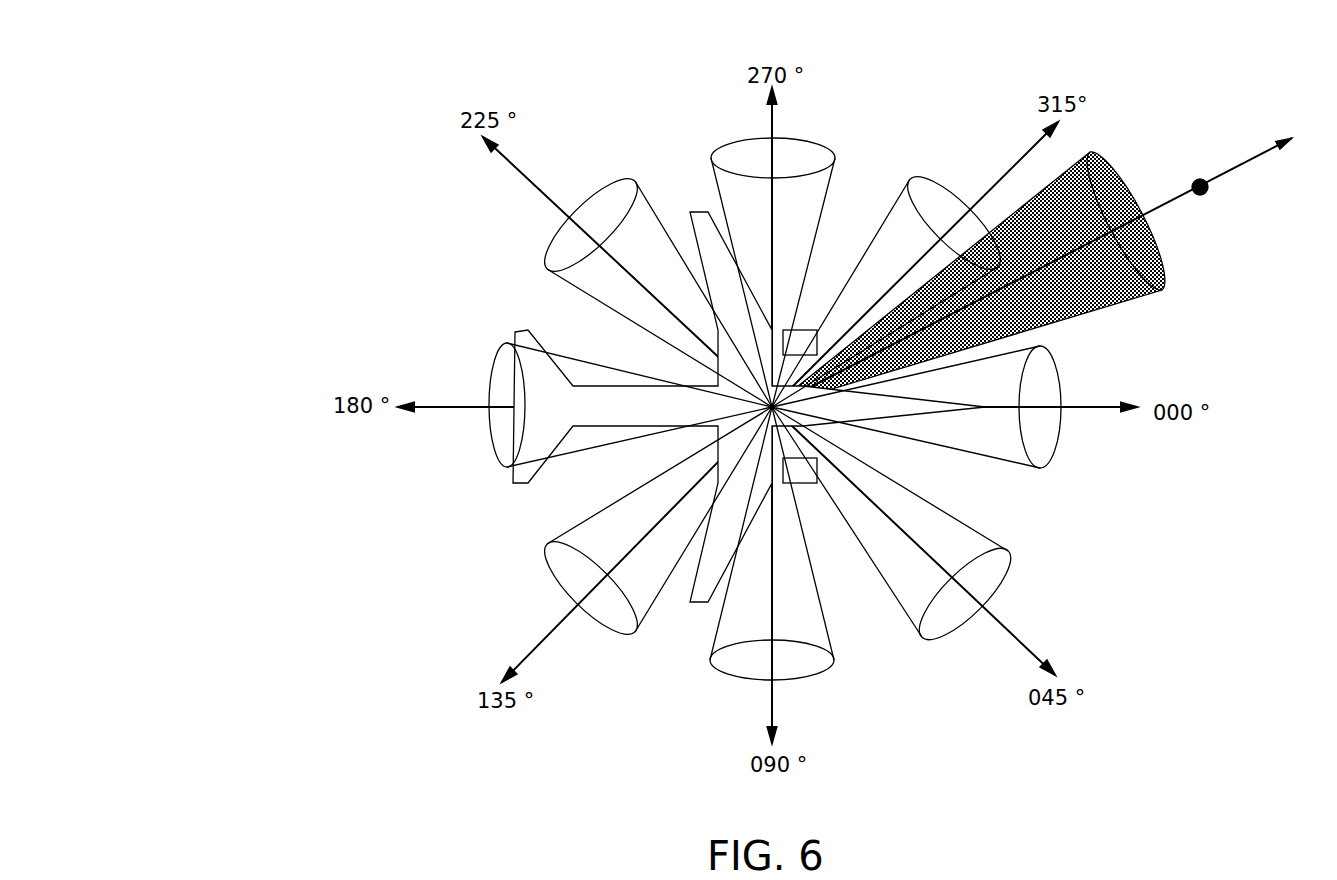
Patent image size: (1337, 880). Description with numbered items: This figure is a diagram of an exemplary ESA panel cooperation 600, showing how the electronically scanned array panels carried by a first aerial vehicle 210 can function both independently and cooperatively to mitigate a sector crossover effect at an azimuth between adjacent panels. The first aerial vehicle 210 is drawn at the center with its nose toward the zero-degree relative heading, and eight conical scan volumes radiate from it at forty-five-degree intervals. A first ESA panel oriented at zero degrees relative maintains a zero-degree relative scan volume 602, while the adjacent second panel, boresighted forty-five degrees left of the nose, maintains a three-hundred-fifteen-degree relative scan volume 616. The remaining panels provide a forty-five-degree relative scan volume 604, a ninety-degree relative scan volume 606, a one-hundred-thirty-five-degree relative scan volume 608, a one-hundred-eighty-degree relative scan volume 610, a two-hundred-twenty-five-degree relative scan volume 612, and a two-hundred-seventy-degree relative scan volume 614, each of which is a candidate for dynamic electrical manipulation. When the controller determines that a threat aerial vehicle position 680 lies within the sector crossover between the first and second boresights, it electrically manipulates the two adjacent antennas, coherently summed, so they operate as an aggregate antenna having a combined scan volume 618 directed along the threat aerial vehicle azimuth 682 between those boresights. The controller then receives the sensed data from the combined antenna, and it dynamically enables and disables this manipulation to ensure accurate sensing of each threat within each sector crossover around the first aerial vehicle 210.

The ESA panel cooperation 600 is at (86, 106).
The first aerial vehicle 210 is at (528, 330).
The 000 degree relative scan volume 602 is at (1058, 377).
The 045 relative scan volume 604 is at (1010, 557).
The 090 relative scan volume 606 is at (712, 657).
The 135 relative scan volume 608 is at (545, 547).
The 180 relative scan volume 610 is at (497, 352).
The 225 relative scan volume 612 is at (635, 181).
The 270 relative scan volume 614 is at (712, 157).
The 315 degree relative scan volume 616 is at (910, 182).
The combined scan volume 618 is at (1115, 168).
The threat aerial vehicle position 680 is at (1201, 180).
The threat aerial vehicle azimuth 682 is at (1263, 157).